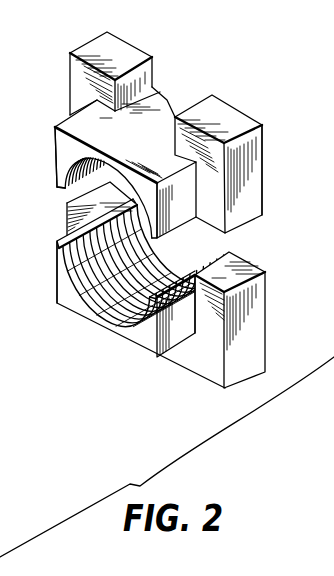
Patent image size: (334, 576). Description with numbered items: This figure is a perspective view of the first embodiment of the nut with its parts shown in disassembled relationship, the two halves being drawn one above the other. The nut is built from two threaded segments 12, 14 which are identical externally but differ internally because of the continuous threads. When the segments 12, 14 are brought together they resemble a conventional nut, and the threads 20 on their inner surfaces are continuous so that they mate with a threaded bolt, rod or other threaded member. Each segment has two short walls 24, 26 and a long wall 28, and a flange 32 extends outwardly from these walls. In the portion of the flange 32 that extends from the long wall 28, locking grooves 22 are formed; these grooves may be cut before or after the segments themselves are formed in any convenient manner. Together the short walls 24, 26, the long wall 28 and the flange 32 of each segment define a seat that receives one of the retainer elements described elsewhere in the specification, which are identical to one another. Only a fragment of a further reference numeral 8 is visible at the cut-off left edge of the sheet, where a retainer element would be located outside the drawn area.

The partial reference numeral (cut off) 8 is at (5, 391).
The threaded segment 12 is at (153, 204).
The threaded segment 14 is at (262, 345).
The threads 20 is at (73, 190).
The locking grooves 22 is at (203, 96).
The short wall 24 is at (192, 211).
The short wall 26 is at (55, 129).
The long wall 28 is at (137, 147).
The flange 32 is at (263, 199).